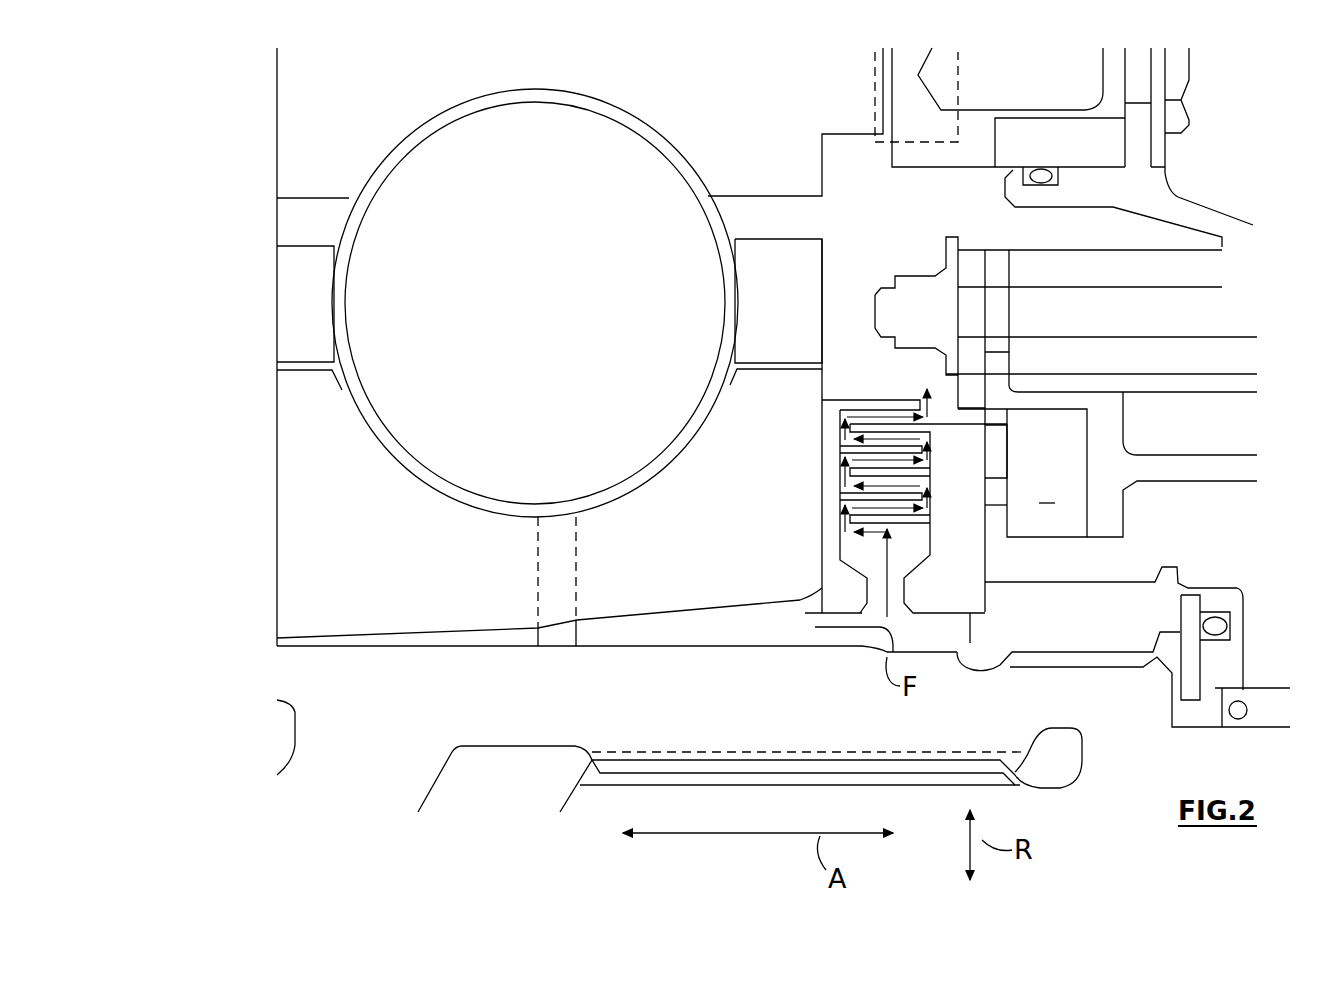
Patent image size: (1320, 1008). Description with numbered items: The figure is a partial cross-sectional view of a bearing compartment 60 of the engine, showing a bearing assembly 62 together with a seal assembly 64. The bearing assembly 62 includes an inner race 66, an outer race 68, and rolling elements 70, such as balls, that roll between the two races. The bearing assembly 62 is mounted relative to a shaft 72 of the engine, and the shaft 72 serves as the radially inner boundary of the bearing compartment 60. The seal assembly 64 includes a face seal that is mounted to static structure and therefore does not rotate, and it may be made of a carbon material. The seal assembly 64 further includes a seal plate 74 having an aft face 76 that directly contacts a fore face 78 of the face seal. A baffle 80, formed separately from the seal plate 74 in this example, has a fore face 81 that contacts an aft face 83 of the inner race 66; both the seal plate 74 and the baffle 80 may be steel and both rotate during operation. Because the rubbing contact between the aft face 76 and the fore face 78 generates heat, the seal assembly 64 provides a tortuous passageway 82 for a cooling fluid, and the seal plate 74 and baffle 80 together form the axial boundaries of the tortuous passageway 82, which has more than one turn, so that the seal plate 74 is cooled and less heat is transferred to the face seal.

The bearing compartment 60 is at (218, 148).
The bearing assembly 62 is at (268, 448).
The seal assembly 64 is at (872, 386).
The inner race 66 is at (661, 576).
The outer race 68 is at (748, 125).
The rolling elements 70 is at (640, 389).
The shaft 72 is at (596, 717).
The seal plate 74 is at (964, 500).
The aft face 76 is at (988, 440).
The fore face 78 is at (985, 480).
The baffle 80 is at (835, 432).
The fore face 81 is at (800, 600).
The tortuous passageway 82 is at (932, 510).
The aft face 83 is at (822, 405).